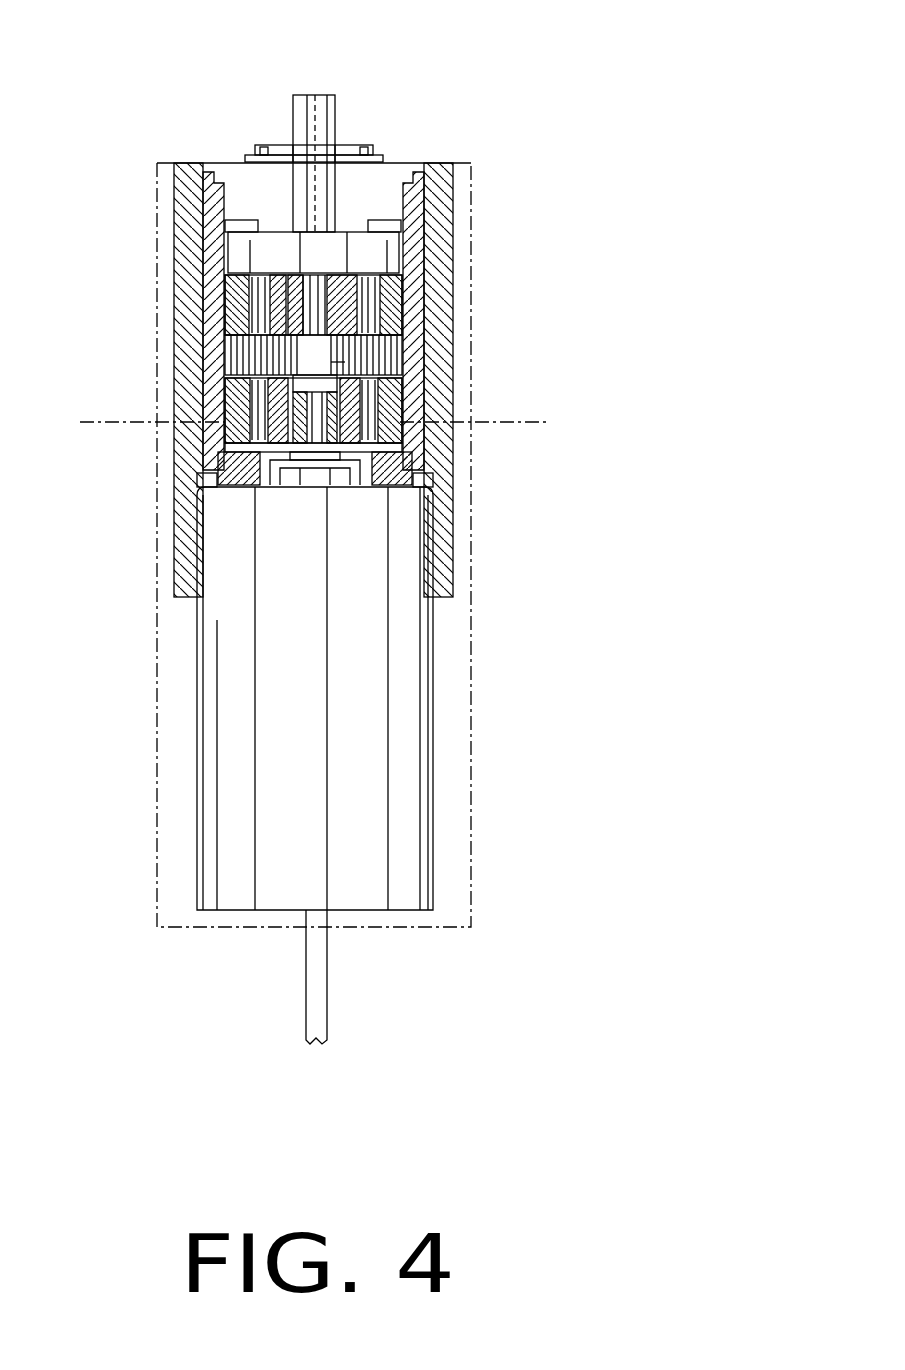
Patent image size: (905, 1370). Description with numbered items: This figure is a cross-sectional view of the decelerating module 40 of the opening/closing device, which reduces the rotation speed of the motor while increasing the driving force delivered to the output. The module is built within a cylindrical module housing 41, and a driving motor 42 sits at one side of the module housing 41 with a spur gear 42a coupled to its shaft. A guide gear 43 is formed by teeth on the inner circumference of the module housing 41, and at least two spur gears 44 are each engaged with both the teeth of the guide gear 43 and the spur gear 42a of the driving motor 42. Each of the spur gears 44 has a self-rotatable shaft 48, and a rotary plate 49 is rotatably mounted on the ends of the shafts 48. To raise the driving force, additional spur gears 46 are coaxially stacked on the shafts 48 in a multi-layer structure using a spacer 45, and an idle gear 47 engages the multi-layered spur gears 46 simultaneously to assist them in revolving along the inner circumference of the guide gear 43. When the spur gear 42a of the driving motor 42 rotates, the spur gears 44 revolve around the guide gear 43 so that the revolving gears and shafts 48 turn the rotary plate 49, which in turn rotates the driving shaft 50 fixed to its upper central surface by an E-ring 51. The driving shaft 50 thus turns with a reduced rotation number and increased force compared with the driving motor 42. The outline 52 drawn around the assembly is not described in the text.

The decelerating module 40 is at (321, 524).
The module housing 41 is at (453, 185).
The driving motor 42 is at (420, 790).
The spur gear 42a is at (225, 445).
The guide gear 43 is at (400, 217).
The spur gears 44 is at (410, 387).
The spacer 45 is at (400, 350).
The spur gears 46 is at (400, 302).
The idle gear 47 is at (240, 300).
The shaft 48 is at (408, 452).
The rotary plate 49 is at (405, 258).
The driving shaft 50 is at (307, 112).
The E-ring 51 is at (252, 152).
The case outline 52 is at (471, 712).